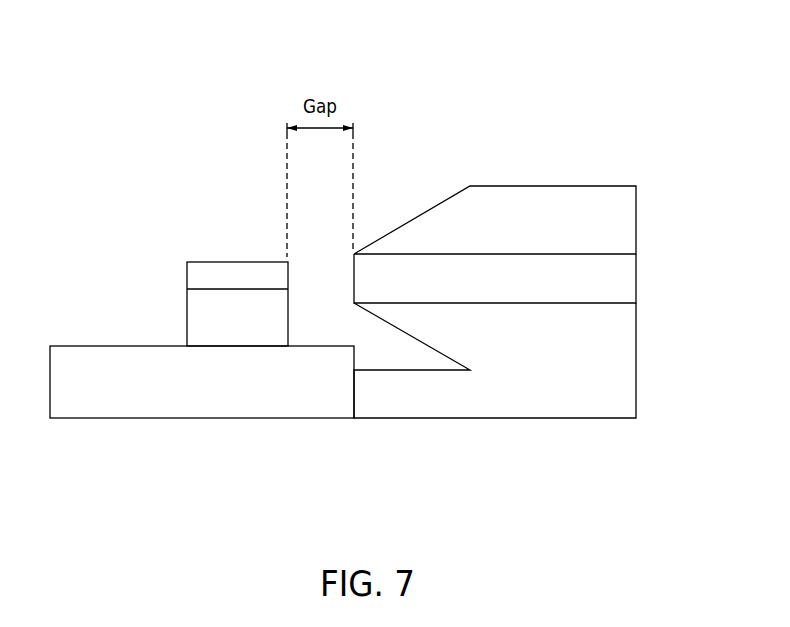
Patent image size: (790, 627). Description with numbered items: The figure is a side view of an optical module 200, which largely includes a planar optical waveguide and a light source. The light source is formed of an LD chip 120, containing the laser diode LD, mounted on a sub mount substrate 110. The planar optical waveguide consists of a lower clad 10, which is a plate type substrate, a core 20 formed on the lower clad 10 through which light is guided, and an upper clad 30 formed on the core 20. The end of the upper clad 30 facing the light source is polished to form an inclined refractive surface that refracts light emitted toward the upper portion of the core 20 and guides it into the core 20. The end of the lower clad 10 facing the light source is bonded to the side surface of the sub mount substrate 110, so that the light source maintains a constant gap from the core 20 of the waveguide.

The optical module 200 is at (112, 141).
The sub mount substrate 110 is at (94, 345).
The LD chip 120 is at (187, 260).
The upper clad 30 is at (632, 220).
The core 20 is at (632, 278).
The lower clad 10 is at (632, 358).